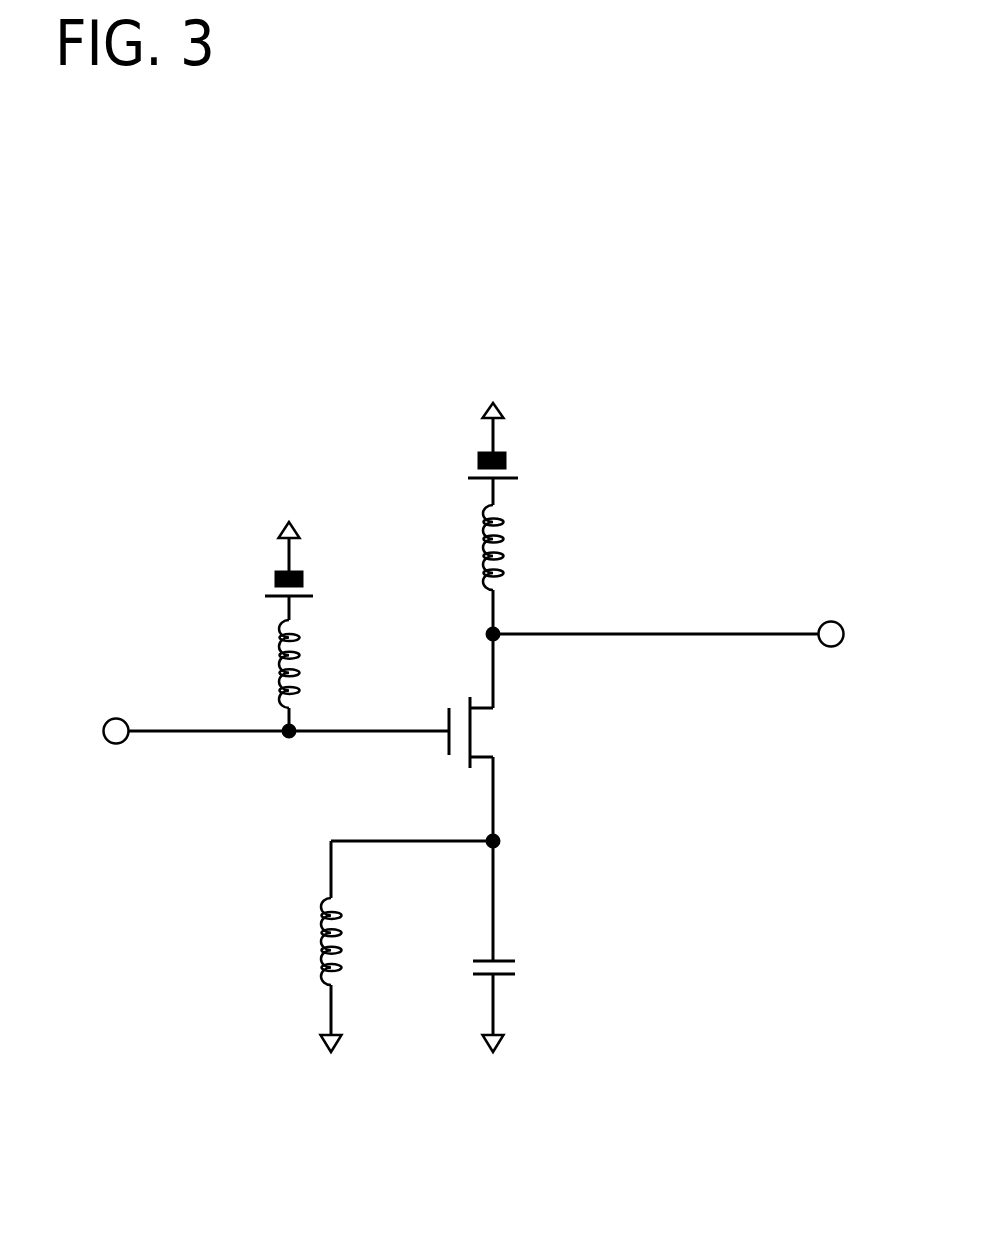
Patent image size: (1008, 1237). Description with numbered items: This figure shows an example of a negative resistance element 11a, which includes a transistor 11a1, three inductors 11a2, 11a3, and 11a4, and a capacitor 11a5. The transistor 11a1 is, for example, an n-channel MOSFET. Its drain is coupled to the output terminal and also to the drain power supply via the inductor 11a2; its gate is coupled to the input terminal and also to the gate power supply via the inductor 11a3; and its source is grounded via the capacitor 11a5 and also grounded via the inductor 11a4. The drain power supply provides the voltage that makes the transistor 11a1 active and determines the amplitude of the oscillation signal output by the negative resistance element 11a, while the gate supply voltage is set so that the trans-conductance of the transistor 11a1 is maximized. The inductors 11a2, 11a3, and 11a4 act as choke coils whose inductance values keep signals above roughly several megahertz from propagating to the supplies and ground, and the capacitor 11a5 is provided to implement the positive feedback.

The negative resistance element 11a is at (790, 322).
The transistor 11a1 is at (448, 708).
The inductor 11a2 is at (502, 553).
The inductor 11a3 is at (278, 652).
The inductor 11a4 is at (320, 937).
The capacitor 11a5 is at (503, 960).